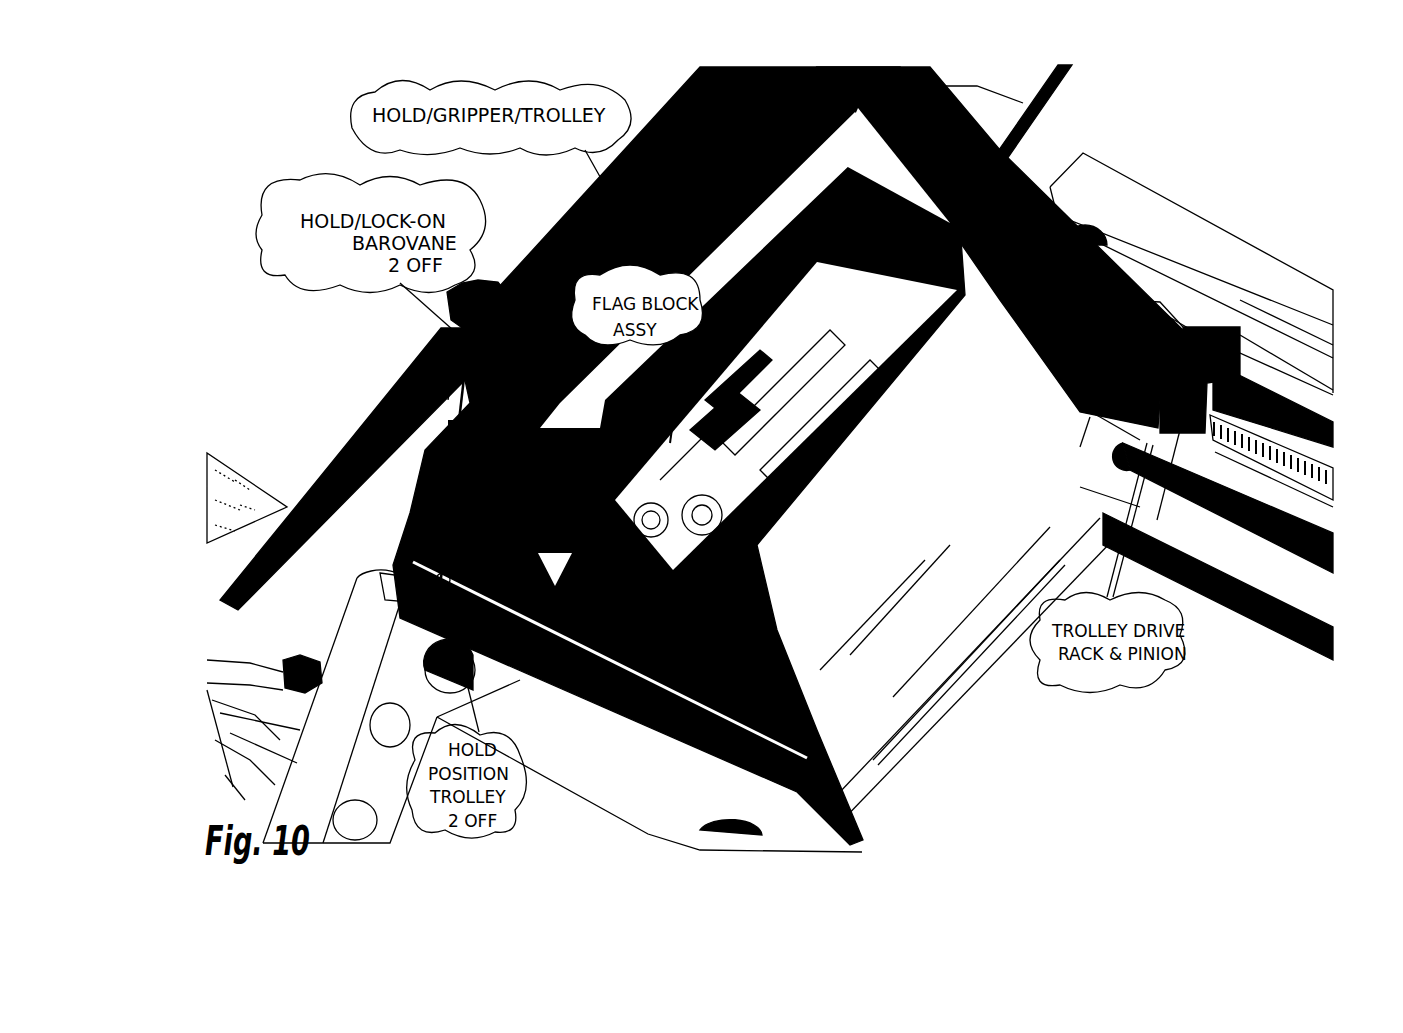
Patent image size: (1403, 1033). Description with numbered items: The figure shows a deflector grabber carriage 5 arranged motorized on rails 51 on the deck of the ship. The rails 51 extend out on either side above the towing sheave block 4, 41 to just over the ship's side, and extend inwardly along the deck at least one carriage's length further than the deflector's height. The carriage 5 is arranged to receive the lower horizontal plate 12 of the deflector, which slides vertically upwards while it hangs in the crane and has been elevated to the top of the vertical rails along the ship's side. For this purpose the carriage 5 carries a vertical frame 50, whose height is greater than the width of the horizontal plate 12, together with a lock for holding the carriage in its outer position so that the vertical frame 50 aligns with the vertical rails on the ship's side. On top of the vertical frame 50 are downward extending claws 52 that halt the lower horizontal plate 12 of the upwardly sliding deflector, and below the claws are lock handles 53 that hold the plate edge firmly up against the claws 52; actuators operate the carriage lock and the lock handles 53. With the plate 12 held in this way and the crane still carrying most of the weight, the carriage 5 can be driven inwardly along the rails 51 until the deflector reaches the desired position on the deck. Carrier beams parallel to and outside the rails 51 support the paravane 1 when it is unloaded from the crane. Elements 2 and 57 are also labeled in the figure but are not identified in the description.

The paravane 1 is at (372, 297).
The gripper bracket 2 is at (230, 698).
The towing sheave block 4 is at (679, 456).
The towing sheave 41 is at (874, 247).
The deflector grabber carriage 5 is at (1034, 118).
The lower horizontal plate 12 is at (363, 469).
The vertical frame 50 is at (376, 473).
The rails 51 is at (721, 632).
The claws 52 is at (429, 282).
The lock handles 53 is at (411, 361).
The carriage block 57 is at (1191, 255).